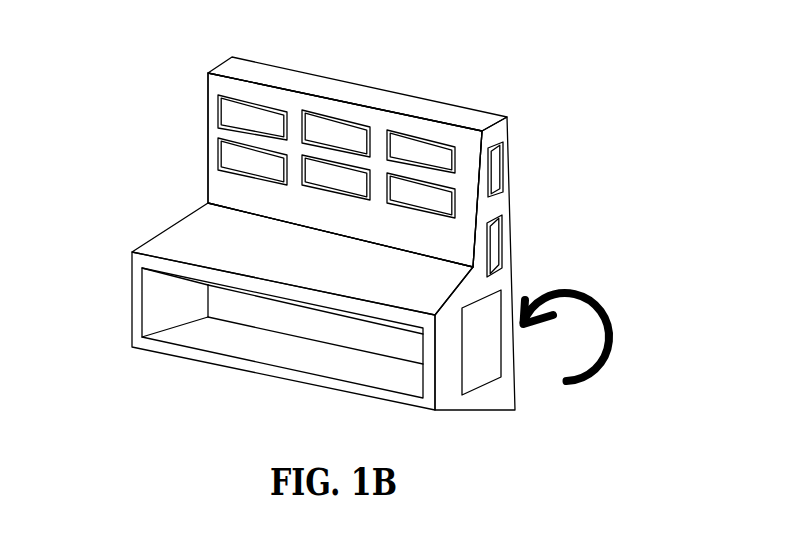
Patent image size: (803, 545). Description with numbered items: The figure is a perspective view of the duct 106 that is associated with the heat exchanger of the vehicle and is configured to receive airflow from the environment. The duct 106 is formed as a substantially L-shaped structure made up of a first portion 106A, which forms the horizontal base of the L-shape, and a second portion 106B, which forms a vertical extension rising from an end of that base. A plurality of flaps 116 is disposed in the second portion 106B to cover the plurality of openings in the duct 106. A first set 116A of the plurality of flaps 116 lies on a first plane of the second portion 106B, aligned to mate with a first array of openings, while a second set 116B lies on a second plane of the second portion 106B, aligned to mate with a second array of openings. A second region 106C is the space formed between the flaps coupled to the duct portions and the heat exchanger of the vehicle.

The duct 106 is at (395, 244).
The first portion 106A is at (195, 225).
The second portion 106B is at (322, 227).
The second region 106C is at (567, 357).
The plurality of flaps 116 is at (472, 186).
The first set of the plurality of flaps 116A is at (439, 164).
The second set of the plurality of flaps 116B is at (510, 165).